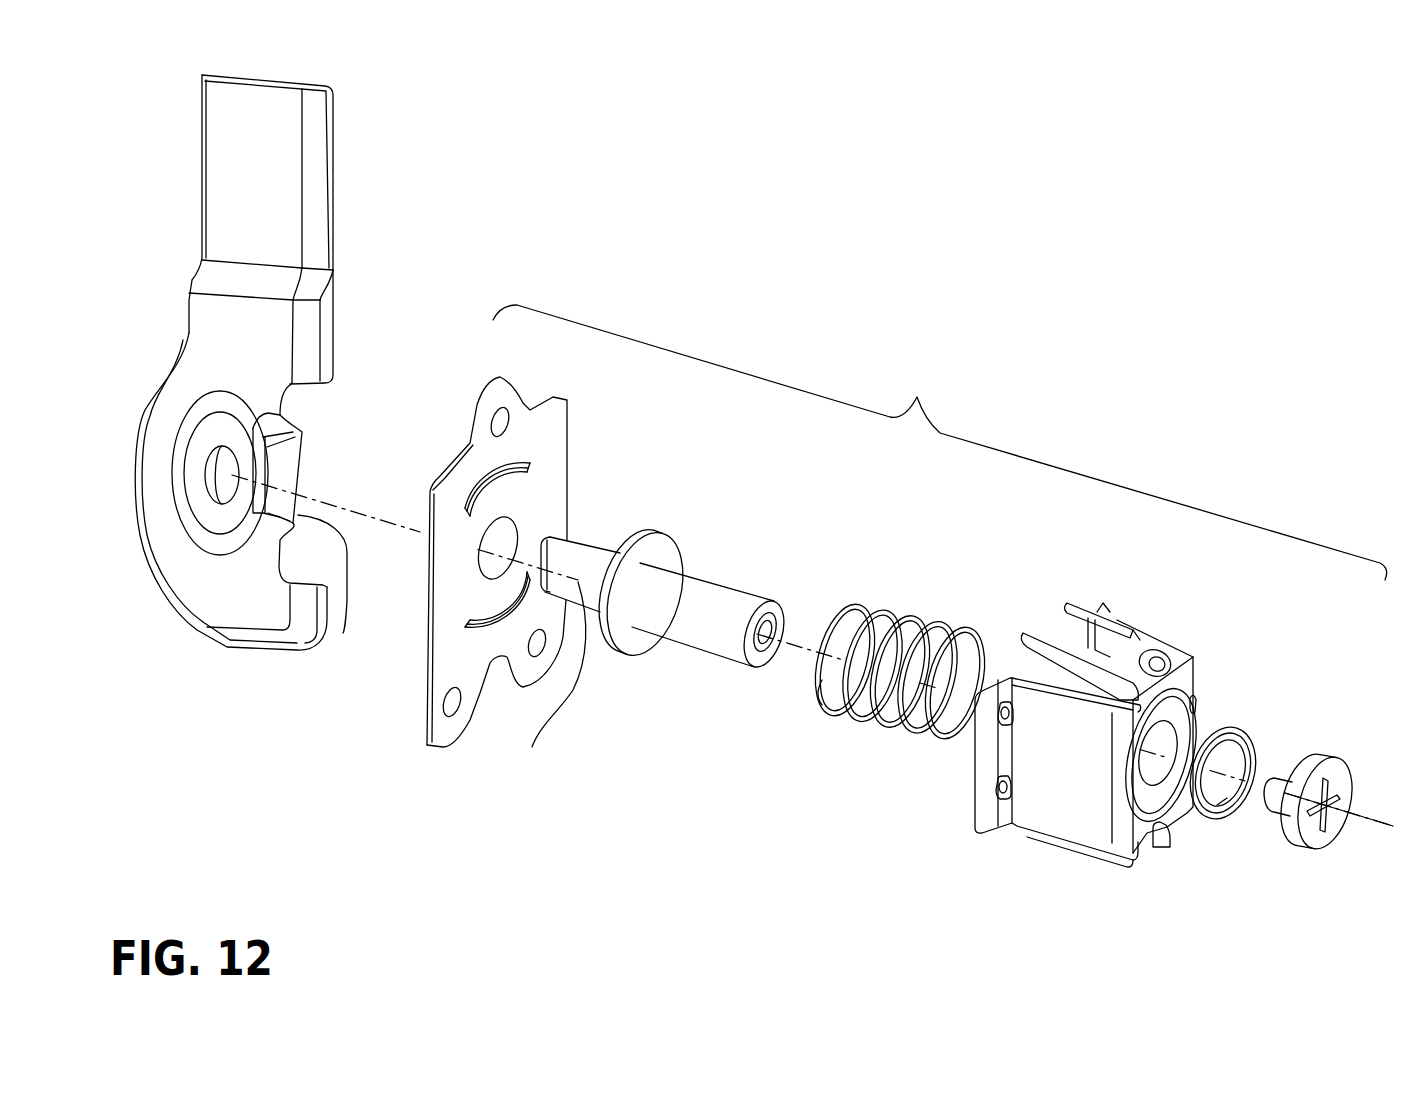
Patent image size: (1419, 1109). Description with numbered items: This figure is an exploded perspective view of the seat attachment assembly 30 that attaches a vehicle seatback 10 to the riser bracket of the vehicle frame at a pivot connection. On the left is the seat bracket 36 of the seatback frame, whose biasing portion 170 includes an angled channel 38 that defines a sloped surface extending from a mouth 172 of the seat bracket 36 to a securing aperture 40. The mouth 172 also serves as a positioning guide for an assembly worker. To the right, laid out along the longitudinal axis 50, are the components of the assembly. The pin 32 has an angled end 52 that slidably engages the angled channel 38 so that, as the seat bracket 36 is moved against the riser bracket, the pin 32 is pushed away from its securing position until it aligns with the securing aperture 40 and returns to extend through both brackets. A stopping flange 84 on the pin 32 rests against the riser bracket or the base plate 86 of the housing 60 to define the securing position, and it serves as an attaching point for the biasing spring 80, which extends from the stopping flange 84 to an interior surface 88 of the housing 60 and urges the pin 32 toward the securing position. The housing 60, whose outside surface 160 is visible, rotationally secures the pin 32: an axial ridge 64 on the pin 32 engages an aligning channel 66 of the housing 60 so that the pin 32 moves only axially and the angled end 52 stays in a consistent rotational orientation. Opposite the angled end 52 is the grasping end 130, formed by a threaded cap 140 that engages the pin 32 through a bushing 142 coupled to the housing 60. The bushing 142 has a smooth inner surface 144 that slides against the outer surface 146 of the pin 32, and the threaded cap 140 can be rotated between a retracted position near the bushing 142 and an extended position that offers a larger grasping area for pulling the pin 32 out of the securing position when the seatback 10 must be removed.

The seatback 10 is at (287, 398).
The seat attachment assembly 30 is at (940, 442).
The pin 32 is at (585, 550).
The seat bracket 36 is at (322, 165).
The angled channel 38 is at (280, 463).
The securing aperture 40 is at (205, 505).
The longitudinal axis 50 is at (1378, 826).
The angled end 52 is at (550, 677).
The housing 60 is at (1145, 637).
The axial ridge 64 is at (700, 648).
The aligning channel 66 is at (1162, 840).
The biasing spring 80 is at (878, 732).
The stopping flange 84 is at (660, 545).
The base plate 86 is at (553, 430).
The interior surface 88 is at (1110, 690).
The grasping end 130 is at (1310, 750).
The threaded cap 140 is at (1313, 832).
The bushing 142 is at (1222, 735).
The inner surface 144 is at (1238, 805).
The outer surface 146 is at (705, 597).
The outside surface 160 is at (1048, 793).
The biasing portion 170 is at (271, 405).
The mouth 172 is at (343, 633).